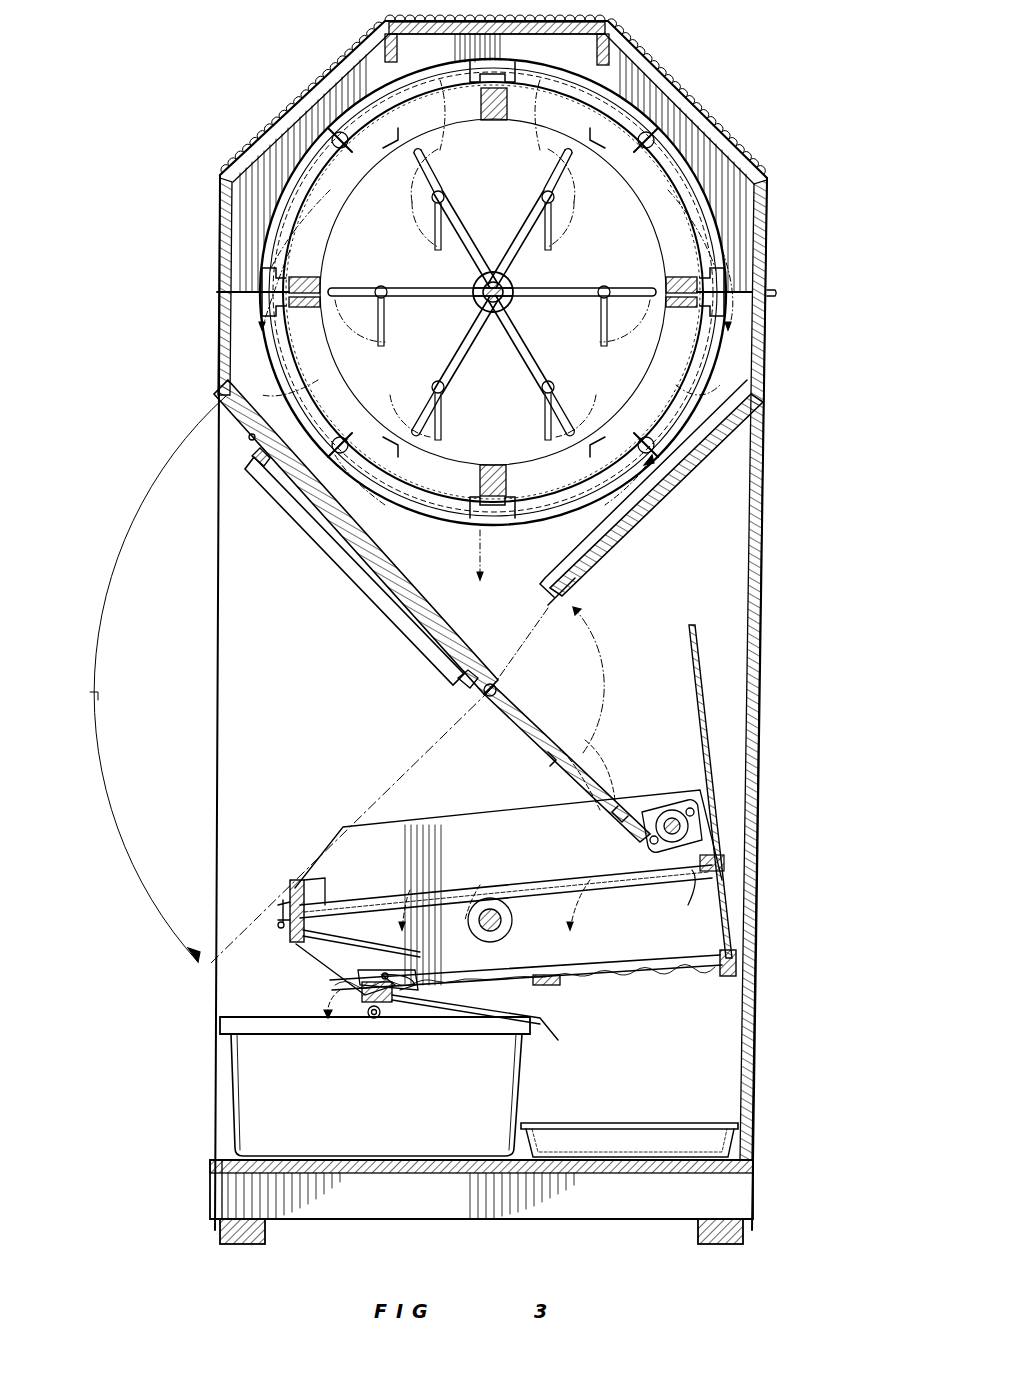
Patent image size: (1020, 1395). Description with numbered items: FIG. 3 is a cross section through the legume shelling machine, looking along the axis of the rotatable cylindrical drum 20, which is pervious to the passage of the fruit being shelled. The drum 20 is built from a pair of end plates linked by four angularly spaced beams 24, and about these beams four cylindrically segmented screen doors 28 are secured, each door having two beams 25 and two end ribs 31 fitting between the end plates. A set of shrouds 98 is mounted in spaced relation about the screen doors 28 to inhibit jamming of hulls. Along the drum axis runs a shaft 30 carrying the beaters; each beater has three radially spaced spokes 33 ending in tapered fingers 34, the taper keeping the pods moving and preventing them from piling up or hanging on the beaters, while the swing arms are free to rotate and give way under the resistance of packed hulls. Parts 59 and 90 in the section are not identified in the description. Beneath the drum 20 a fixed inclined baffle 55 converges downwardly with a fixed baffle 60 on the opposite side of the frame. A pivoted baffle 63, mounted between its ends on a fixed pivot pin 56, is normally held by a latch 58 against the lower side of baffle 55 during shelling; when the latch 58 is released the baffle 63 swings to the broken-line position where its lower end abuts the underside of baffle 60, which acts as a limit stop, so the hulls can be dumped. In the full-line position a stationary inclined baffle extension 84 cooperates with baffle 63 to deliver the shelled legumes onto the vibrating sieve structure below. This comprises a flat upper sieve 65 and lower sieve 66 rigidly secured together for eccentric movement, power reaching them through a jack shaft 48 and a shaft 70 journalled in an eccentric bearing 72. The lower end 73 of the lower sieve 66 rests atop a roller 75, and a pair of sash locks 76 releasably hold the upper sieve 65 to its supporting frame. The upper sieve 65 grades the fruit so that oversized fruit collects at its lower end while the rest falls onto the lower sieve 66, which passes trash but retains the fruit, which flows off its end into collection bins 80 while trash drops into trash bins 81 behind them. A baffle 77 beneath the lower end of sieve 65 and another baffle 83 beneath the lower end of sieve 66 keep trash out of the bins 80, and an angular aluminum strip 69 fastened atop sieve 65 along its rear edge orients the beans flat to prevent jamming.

The rotatable cylindrical drum 20 is at (615, 118).
The beams 24 is at (497, 110).
The beams 25 is at (505, 112).
The screen doors 28 is at (660, 150).
The shaft 30 is at (510, 285).
The end ribs 31 is at (645, 398).
The spokes 33 is at (415, 292).
The tapered fingers 34 is at (393, 284).
The jack shaft 48 is at (494, 928).
The fixed inclined baffle 55 is at (412, 586).
The fixed pivot pin 56 is at (488, 698).
The latch 58 is at (250, 440).
The chute plate 59 is at (572, 590).
The fixed baffle 60 is at (650, 512).
The pivoted baffle 63 is at (530, 714).
The upper sieve 65 is at (500, 885).
The lower sieve 66 is at (585, 960).
The angular aluminum strip 69 is at (700, 876).
The shaft 70 is at (655, 812).
The eccentric bearing 72 is at (672, 818).
The lower end of lower sieve 73 is at (370, 1005).
The roller 75 is at (380, 1018).
The sash locks 76 is at (285, 925).
The baffle 77 is at (365, 942).
The collection bins 80 is at (364, 1096).
The trash bins 81 is at (586, 1135).
The baffle 83 is at (540, 1014).
The stationary inclined baffle extension 84 is at (600, 812).
The paddles 90 is at (552, 226).
The shrouds 98 is at (580, 93).